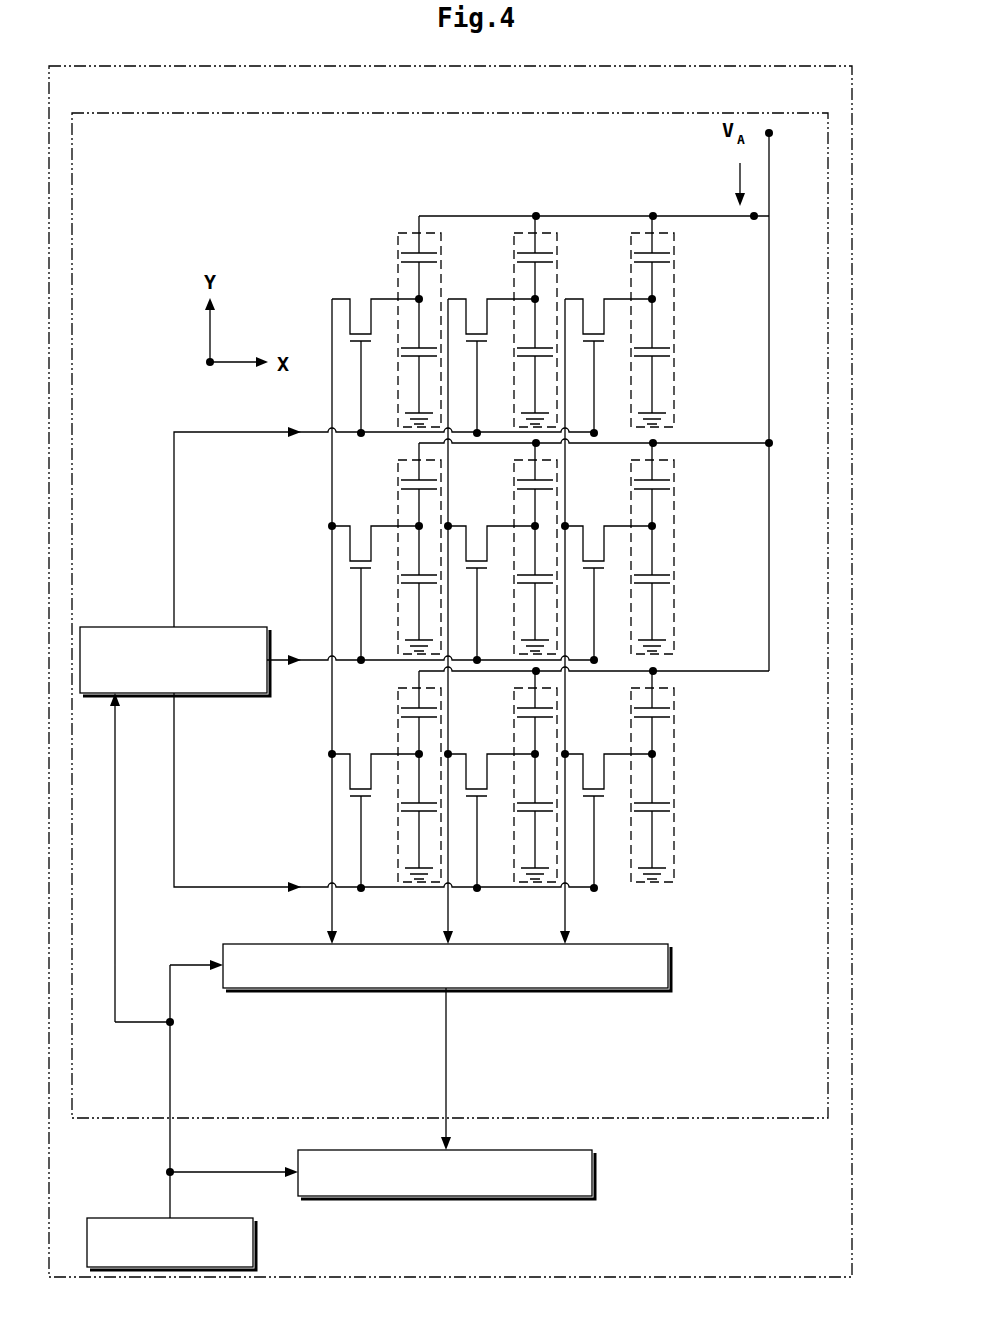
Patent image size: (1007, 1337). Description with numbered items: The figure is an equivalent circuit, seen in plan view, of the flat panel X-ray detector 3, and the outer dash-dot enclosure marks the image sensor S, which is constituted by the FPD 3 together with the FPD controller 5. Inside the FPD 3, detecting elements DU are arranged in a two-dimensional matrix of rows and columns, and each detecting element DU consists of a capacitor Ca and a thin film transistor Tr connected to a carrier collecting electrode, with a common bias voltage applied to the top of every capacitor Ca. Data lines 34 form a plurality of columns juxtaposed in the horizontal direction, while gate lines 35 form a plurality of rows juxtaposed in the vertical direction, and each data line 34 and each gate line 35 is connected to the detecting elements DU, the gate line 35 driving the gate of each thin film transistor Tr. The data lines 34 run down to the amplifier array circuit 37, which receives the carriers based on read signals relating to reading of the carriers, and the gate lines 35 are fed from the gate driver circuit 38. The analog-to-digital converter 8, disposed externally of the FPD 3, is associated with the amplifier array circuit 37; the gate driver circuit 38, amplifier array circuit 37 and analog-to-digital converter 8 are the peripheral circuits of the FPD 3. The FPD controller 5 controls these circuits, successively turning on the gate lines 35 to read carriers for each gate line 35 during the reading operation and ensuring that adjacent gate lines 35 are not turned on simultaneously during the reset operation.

The image sensor S is at (459, 99).
The flat panel X-ray detector 3 is at (459, 143).
The detecting element DU is at (396, 290).
The capacitor Ca is at (674, 352).
The thin film transistor Tr is at (361, 538).
The gate line 35 is at (259, 436).
The data line 34 is at (335, 912).
The gate driver circuit 38 is at (187, 626).
The amplifier array circuit 37 is at (671, 960).
The analog-to-digital converter 8 is at (595, 1170).
The FPD controller 5 is at (256, 1238).